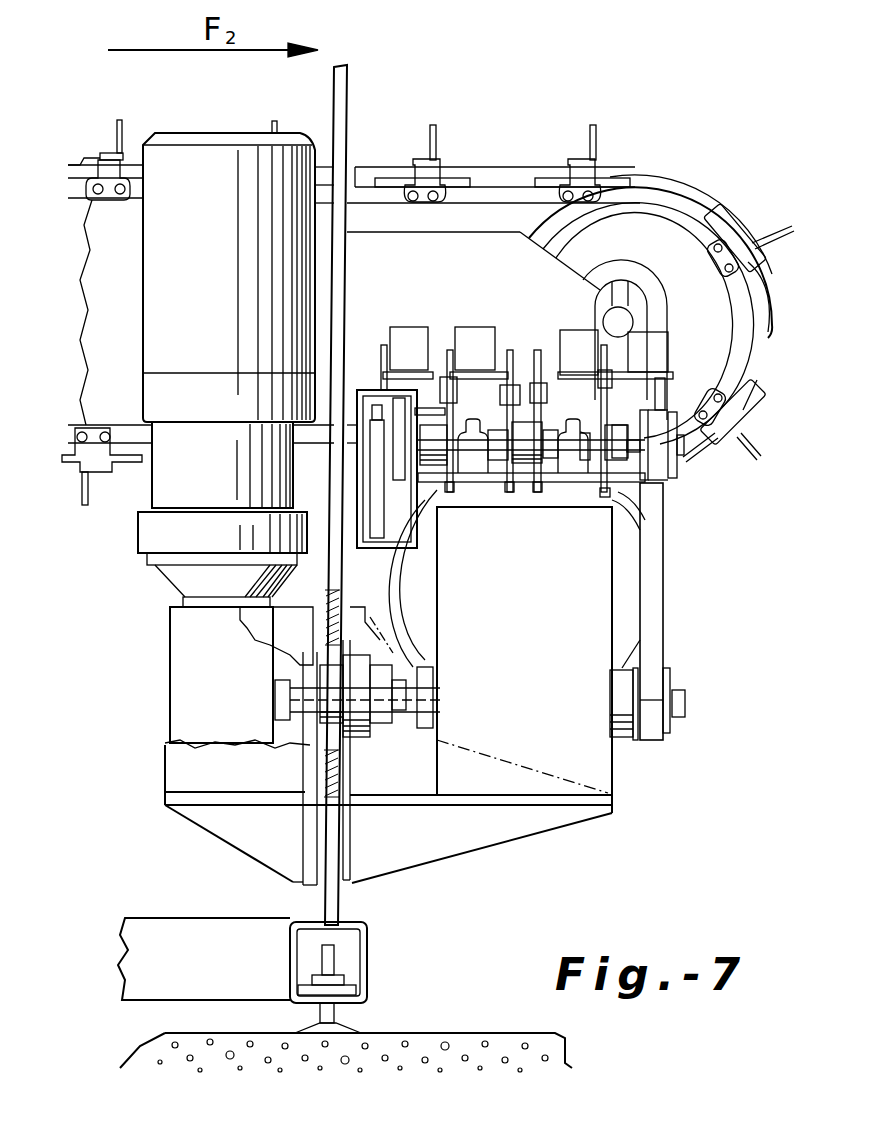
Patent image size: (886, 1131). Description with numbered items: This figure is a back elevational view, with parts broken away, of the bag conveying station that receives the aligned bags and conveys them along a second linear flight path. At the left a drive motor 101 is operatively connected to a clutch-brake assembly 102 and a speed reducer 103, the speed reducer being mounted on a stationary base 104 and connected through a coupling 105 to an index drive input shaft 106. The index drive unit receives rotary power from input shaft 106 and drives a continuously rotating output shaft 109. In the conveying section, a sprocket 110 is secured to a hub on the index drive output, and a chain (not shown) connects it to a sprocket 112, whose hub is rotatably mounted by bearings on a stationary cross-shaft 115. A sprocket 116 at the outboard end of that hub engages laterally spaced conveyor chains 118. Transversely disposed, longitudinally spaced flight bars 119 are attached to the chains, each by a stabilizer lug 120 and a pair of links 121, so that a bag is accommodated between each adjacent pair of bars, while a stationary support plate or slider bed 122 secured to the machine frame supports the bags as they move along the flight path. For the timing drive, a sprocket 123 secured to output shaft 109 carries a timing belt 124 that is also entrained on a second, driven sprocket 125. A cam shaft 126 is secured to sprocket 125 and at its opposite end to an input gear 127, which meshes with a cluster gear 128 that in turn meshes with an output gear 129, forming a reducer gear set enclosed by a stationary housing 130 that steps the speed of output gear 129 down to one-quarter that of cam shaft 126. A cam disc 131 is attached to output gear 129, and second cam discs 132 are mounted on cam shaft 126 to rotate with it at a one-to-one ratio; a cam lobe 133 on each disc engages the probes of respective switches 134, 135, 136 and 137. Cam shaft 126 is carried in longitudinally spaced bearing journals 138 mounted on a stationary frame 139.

The drive motor 101 is at (198, 283).
The clutch-brake assembly 102 is at (206, 475).
The speed reducer 103 is at (233, 693).
The stationary base 104 is at (230, 832).
The coupling 105 is at (360, 735).
The index drive input shaft 106 is at (400, 712).
The output shaft 109 is at (688, 705).
The sprocket 110 is at (425, 646).
The sprocket 112 is at (652, 312).
The stationary cross-shaft 115 is at (612, 320).
The sprocket 116 is at (727, 352).
The conveyor chains 118 is at (680, 212).
The flight bars 119 is at (598, 140).
The stabilizer lug 120 is at (548, 182).
The links 121 is at (430, 178).
The stationary support plate or slider bed 122 is at (375, 170).
The sprocket 123 is at (672, 680).
The timing belt 124 is at (660, 588).
The driven sprocket 125 is at (686, 450).
The cam shaft 126 is at (642, 470).
The input gear 127 is at (368, 415).
The cluster gear 128 is at (375, 550).
The output gear 129 is at (385, 347).
The stationary housing 130 is at (415, 530).
The cam disc 131 is at (433, 403).
The second cam discs 132 is at (603, 400).
The cam lobe 133 is at (517, 387).
The switch 134 is at (425, 362).
The switch 135 is at (490, 362).
The switch 136 is at (595, 365).
The switch 137 is at (663, 366).
The bearing journals 138 is at (570, 470).
The stationary frame 139 is at (467, 482).